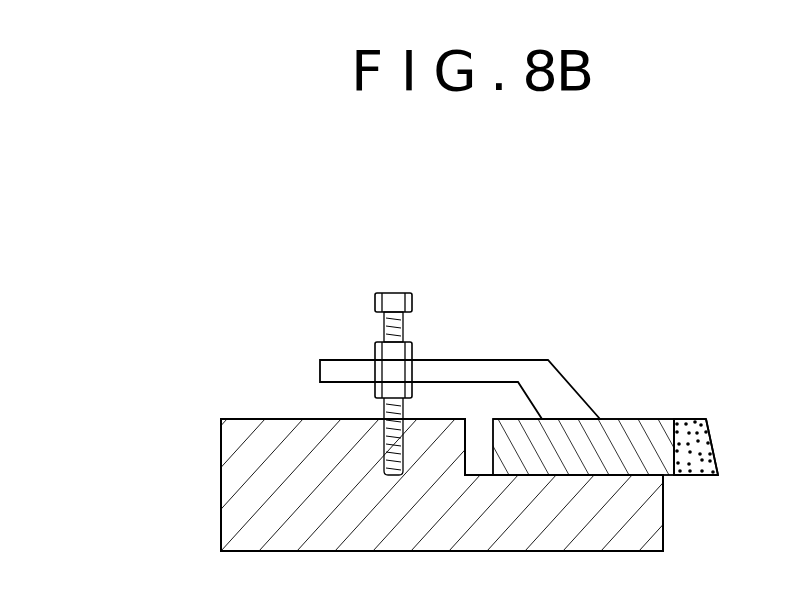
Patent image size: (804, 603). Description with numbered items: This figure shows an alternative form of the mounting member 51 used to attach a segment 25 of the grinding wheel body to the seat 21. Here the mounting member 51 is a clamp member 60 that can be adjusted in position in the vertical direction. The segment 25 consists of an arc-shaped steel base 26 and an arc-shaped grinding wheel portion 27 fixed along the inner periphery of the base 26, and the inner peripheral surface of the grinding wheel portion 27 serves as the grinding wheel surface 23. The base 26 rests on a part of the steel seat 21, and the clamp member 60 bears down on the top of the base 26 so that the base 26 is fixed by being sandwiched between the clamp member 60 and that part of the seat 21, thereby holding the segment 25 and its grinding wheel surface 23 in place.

The seat 21 is at (270, 419).
The mounting member 51 is at (367, 290).
The clamp member 60 is at (498, 360).
The segment 25 is at (727, 322).
The base 26 is at (613, 419).
The grinding wheel portion 27 is at (697, 419).
The grinding wheel surface 23 is at (710, 442).